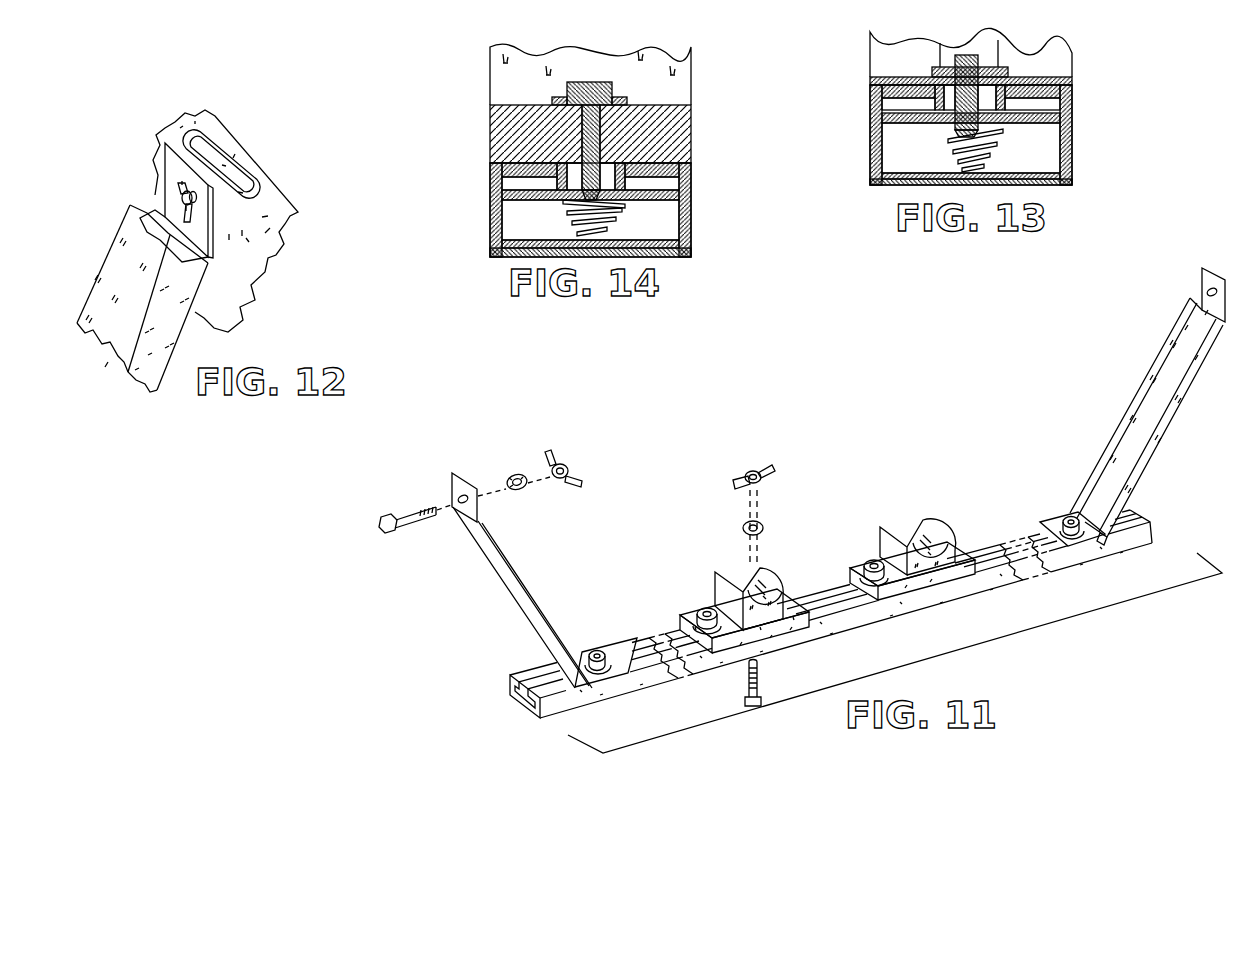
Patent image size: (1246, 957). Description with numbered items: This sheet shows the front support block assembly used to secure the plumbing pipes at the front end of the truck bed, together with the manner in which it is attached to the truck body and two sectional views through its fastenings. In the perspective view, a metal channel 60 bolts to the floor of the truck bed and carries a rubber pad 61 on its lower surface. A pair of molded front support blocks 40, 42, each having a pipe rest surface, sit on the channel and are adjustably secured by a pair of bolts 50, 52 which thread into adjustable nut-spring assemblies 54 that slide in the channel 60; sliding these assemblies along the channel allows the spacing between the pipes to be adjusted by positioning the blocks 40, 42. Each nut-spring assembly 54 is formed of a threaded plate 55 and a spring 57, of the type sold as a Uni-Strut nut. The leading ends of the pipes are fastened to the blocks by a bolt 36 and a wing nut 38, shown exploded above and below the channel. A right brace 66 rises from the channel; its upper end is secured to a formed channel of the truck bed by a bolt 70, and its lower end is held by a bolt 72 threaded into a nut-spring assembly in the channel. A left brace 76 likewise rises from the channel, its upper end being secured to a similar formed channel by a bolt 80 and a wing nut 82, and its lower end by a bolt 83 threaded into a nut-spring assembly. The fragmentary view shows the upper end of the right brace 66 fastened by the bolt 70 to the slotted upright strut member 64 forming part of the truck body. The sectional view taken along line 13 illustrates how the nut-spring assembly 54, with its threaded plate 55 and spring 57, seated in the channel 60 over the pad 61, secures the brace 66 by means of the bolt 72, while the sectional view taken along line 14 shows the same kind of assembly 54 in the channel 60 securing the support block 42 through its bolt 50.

In FIG. 11, the section line 13— 13 is at (1055, 510).
In FIG. 11, the section line 14— 14 is at (858, 558).
In FIG. 11, the bolt 36 is at (762, 675).
In FIG. 11, the wing nut 38 is at (771, 477).
In FIG. 11, the front support block 40 is at (690, 608).
In FIG. 14, the front support block 42 is at (490, 120).
In FIG. 11, the front support block 42 is at (927, 521).
In FIG. 14, the bolt 50 is at (616, 82).
In FIG. 11, the bolt 50 is at (703, 607).
In FIG. 11, the bolt 52 is at (790, 598).
In FIG. 14, the adjustable nut-spring assembly 54 is at (662, 211).
In FIG. 13, the adjustable nut-spring assembly 54 is at (1044, 137).
In FIG. 14, the threaded plate 55 is at (556, 204).
In FIG. 13, the threaded plate 55 is at (925, 131).
In FIG. 14, the spring 57 is at (620, 209).
In FIG. 13, the spring 57 is at (990, 141).
In FIG. 14, the metal channel 60 is at (490, 216).
In FIG. 13, the metal channel 60 is at (870, 150).
In FIG. 11, the metal channel 60 is at (642, 680).
In FIG. 14, the rubber pad 61 is at (492, 257).
In FIG. 13, the rubber pad 61 is at (875, 187).
In FIG. 11, the rubber pad 61 is at (540, 718).
In FIG. 12, the slotted plate 64 is at (274, 200).
In FIG. 12, the right brace 66 is at (125, 237).
In FIG. 13, the right brace 66 is at (1058, 62).
In FIG. 11, the right brace 66 is at (1128, 400).
In FIG. 12, the bolt 70 is at (174, 198).
In FIG. 13, the bolt 72 is at (980, 60).
In FIG. 11, the bolt 72 is at (1043, 518).
In FIG. 11, the left brace 76 is at (503, 553).
In FIG. 11, the bolt 80 is at (418, 533).
In FIG. 11, the wing nut 82 is at (577, 488).
In FIG. 11, the bolt 83 is at (597, 648).